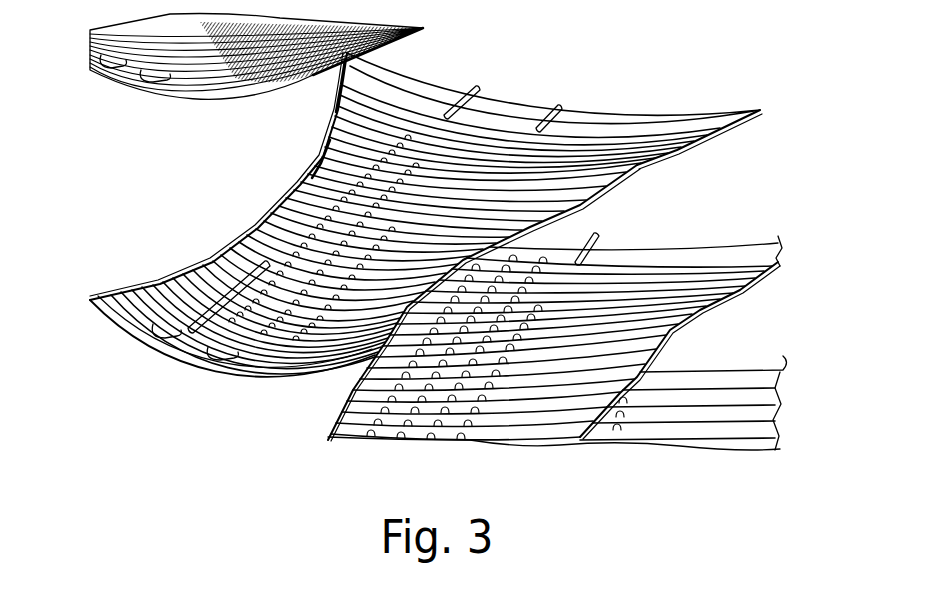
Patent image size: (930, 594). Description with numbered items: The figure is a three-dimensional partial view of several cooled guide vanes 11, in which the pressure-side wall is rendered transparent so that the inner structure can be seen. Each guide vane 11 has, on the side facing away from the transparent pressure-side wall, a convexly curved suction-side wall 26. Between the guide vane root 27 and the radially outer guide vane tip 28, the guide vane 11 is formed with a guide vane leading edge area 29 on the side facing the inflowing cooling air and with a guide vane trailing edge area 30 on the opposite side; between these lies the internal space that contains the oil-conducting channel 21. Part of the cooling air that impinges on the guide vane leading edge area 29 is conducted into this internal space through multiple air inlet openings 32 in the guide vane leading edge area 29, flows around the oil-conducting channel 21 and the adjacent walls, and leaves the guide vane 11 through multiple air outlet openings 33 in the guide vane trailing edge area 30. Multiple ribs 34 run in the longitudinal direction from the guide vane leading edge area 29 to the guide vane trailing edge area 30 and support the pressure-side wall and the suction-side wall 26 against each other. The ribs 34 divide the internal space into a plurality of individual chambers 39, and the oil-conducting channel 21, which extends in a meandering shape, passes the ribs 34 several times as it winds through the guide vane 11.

The guide vane 11 is at (690, 110).
The oil-conducting channel 21 is at (473, 90).
The suction-side wall 26 is at (123, 80).
The guide vane root 27 is at (578, 118).
The guide vane tip 28 is at (130, 340).
The guide vane leading edge area 29 is at (210, 261).
The guide vane trailing edge area 30 is at (602, 189).
The air inlet openings 32 is at (340, 105).
The air outlet openings 33 is at (650, 153).
The ribs 34 is at (325, 172).
The chambers 39 is at (273, 215).